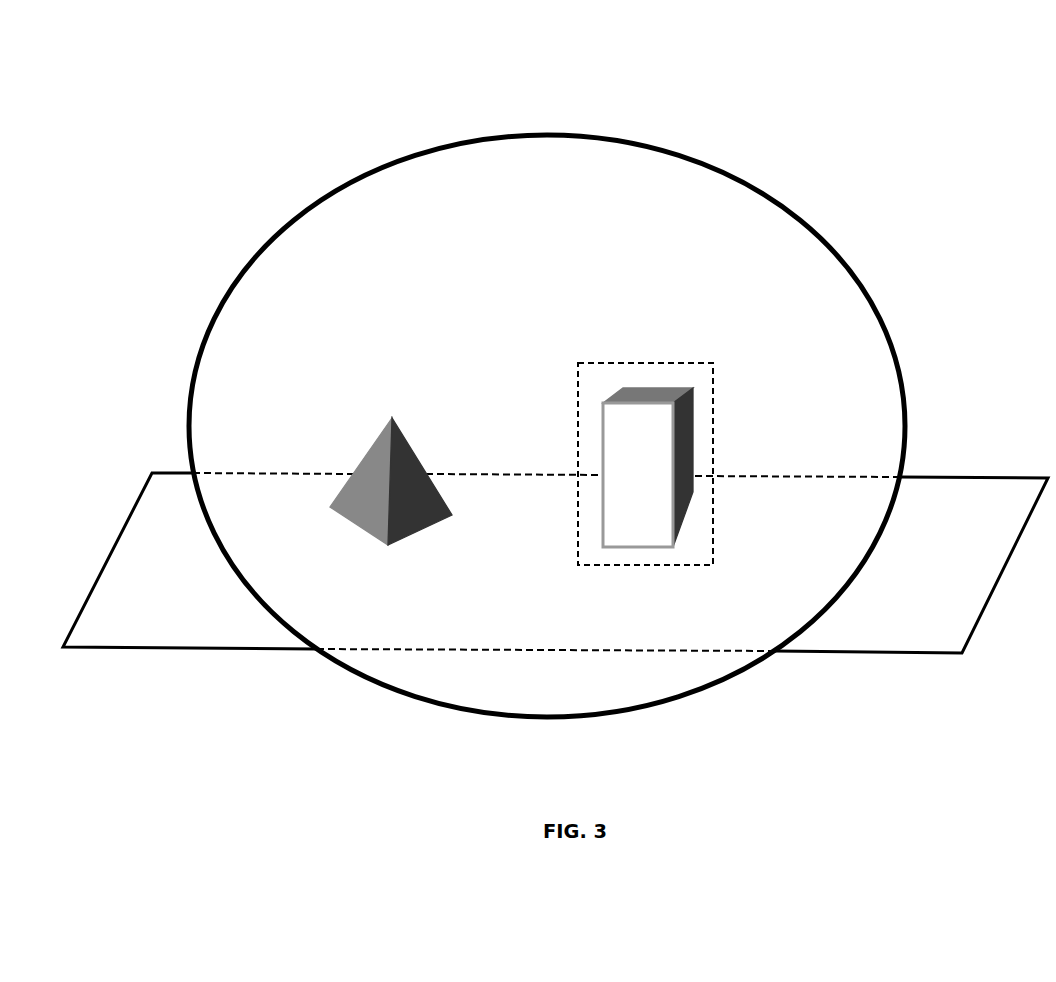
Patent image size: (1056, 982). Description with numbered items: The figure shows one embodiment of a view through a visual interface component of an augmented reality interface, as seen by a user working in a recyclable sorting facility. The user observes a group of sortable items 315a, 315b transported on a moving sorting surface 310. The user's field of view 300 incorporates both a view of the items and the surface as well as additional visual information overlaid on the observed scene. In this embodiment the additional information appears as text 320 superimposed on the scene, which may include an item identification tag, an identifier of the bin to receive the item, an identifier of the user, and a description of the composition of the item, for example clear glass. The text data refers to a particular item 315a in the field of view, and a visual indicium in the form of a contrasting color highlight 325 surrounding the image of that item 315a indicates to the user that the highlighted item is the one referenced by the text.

The field of view 300 is at (200, 168).
The moving sorting surface 310 is at (963, 458).
The sortable item 315a is at (698, 532).
The sortable item 315b is at (364, 534).
The text 320 is at (417, 203).
The contrasting color highlight 325 is at (735, 372).